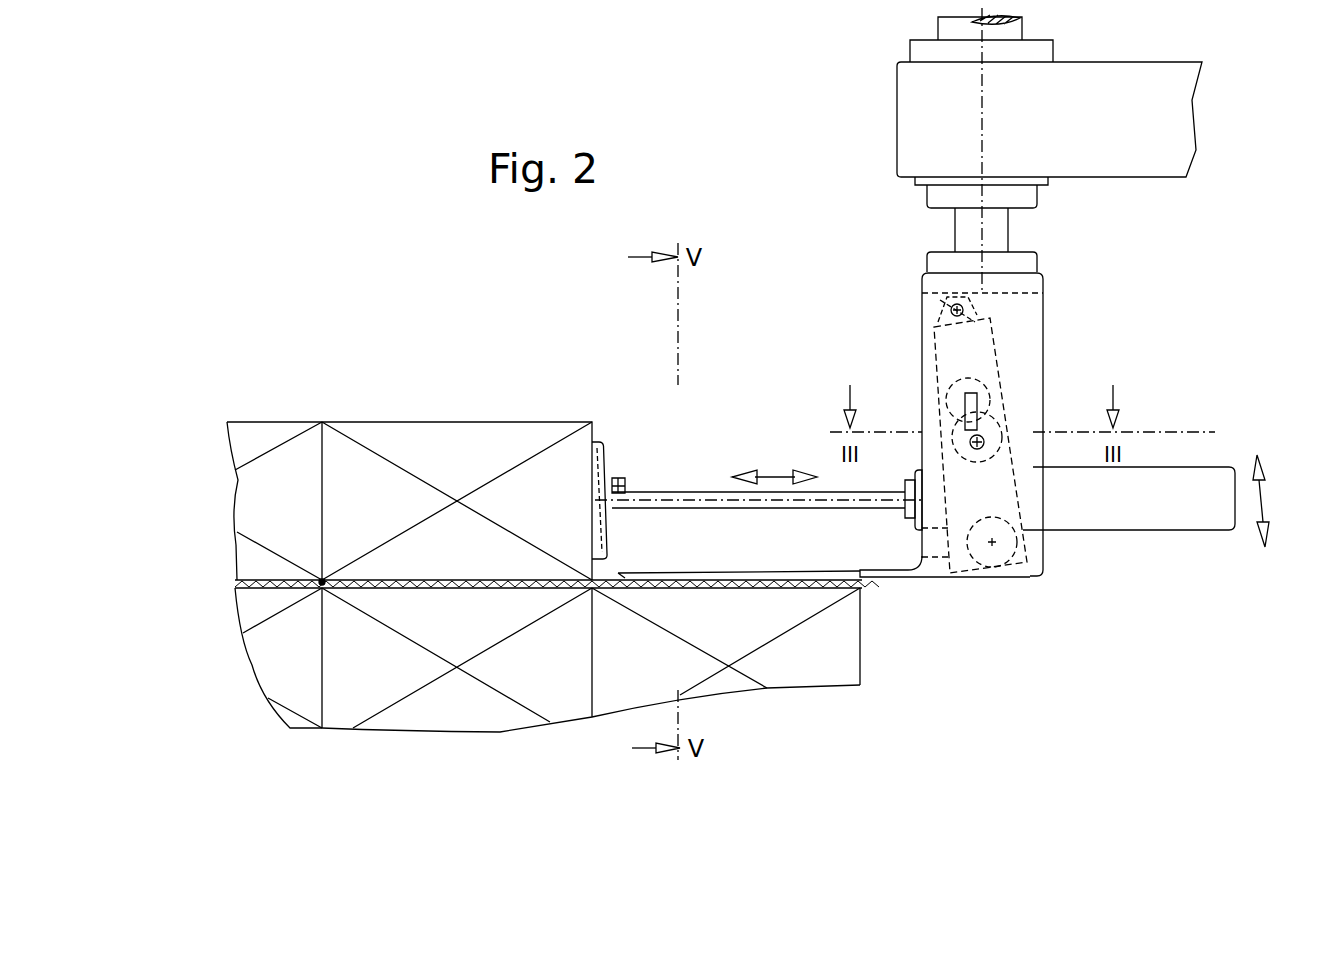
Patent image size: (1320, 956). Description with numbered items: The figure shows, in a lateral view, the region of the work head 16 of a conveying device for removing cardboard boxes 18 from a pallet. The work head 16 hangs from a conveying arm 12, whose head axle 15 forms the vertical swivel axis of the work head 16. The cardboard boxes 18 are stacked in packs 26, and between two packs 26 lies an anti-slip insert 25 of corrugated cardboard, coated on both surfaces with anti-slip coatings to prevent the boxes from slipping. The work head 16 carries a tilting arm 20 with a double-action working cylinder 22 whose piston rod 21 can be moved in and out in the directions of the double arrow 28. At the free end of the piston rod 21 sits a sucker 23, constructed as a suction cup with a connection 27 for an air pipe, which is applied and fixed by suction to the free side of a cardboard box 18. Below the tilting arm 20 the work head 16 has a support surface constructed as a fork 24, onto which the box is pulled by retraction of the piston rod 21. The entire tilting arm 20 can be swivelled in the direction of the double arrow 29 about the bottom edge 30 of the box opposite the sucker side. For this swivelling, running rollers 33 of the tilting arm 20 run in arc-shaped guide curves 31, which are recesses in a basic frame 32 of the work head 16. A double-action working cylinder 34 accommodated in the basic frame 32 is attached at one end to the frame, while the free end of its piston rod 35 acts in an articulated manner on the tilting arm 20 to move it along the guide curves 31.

The conveying arm 12 is at (952, 102).
The head axle 15 is at (975, 232).
The work head 16 is at (1056, 323).
The cardboard box 18 is at (260, 443).
The tilting arm 20 is at (1060, 546).
The piston rod 21 is at (697, 495).
The double-action working cylinder 22 is at (1160, 500).
The sucker 23 is at (605, 450).
The fork 24 is at (866, 578).
The anti-slip insert 25 is at (710, 588).
The pack 26 is at (347, 418).
The connection 27 is at (627, 477).
The double arrow 28 is at (773, 477).
The double arrow 29 is at (1258, 498).
The bottom edge 30 is at (322, 580).
The guide curve 31 is at (982, 398).
The basic frame 32 is at (1022, 310).
The running roller 33 is at (985, 418).
The double-action working cylinder 34 is at (945, 343).
The piston rod 35 is at (965, 395).